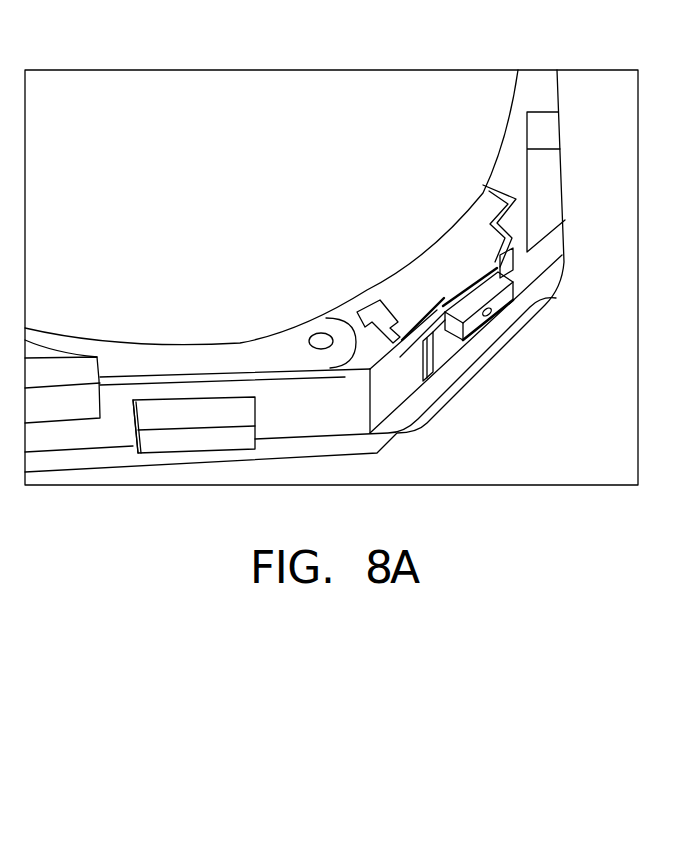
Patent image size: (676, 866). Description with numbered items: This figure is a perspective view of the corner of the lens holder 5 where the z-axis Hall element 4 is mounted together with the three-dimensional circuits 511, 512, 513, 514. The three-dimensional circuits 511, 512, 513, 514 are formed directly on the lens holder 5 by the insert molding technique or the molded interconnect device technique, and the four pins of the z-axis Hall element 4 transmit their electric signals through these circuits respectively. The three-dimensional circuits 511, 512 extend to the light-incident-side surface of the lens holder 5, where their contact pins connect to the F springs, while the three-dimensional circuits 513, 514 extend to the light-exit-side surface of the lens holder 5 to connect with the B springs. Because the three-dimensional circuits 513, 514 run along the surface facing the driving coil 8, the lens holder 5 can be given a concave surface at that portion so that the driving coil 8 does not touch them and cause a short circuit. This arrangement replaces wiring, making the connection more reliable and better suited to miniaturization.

The lens holder 5 is at (540, 92).
The z-axis hall element 4 is at (500, 302).
The driving coil 8 is at (492, 352).
The three-dimensional circuit 511 is at (427, 317).
The three-dimensional circuit 512 is at (492, 248).
The three-dimensional circuit 513 is at (428, 360).
The three-dimensional circuit 514 is at (506, 276).